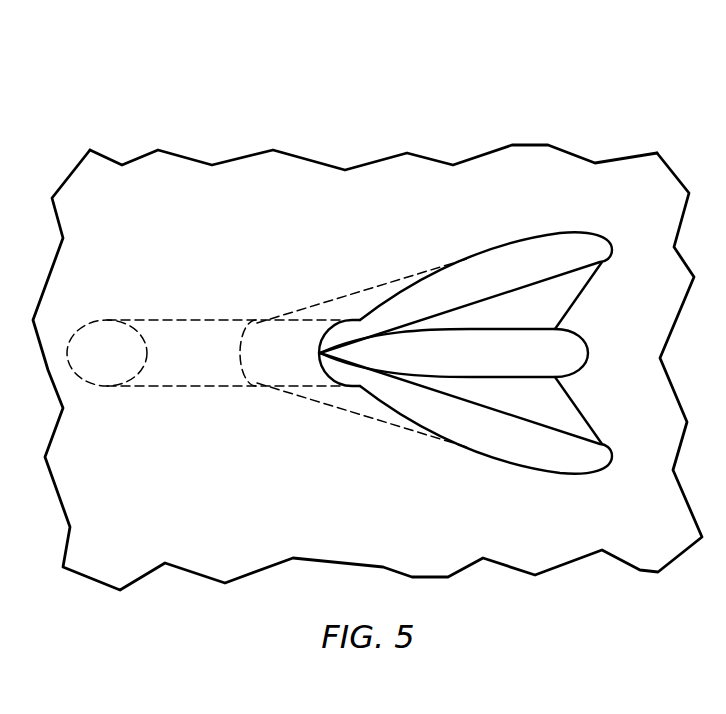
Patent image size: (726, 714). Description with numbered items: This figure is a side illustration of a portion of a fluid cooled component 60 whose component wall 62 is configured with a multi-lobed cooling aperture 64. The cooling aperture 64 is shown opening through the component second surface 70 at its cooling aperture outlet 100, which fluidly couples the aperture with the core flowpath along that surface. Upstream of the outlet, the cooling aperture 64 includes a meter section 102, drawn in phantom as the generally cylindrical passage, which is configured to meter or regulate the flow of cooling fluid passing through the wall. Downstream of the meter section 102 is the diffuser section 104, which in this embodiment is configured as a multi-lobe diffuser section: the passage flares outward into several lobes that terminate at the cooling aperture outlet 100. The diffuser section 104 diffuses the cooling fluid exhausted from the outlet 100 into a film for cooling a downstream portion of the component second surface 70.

The fluid cooled component 60 is at (367, 319).
The component wall 62 is at (541, 134).
The cooling aperture 64 is at (586, 243).
The component second surface 70 is at (645, 522).
The cooling aperture outlet 100 is at (552, 316).
The meter section 102 is at (183, 308).
The diffuser section 104 is at (404, 260).